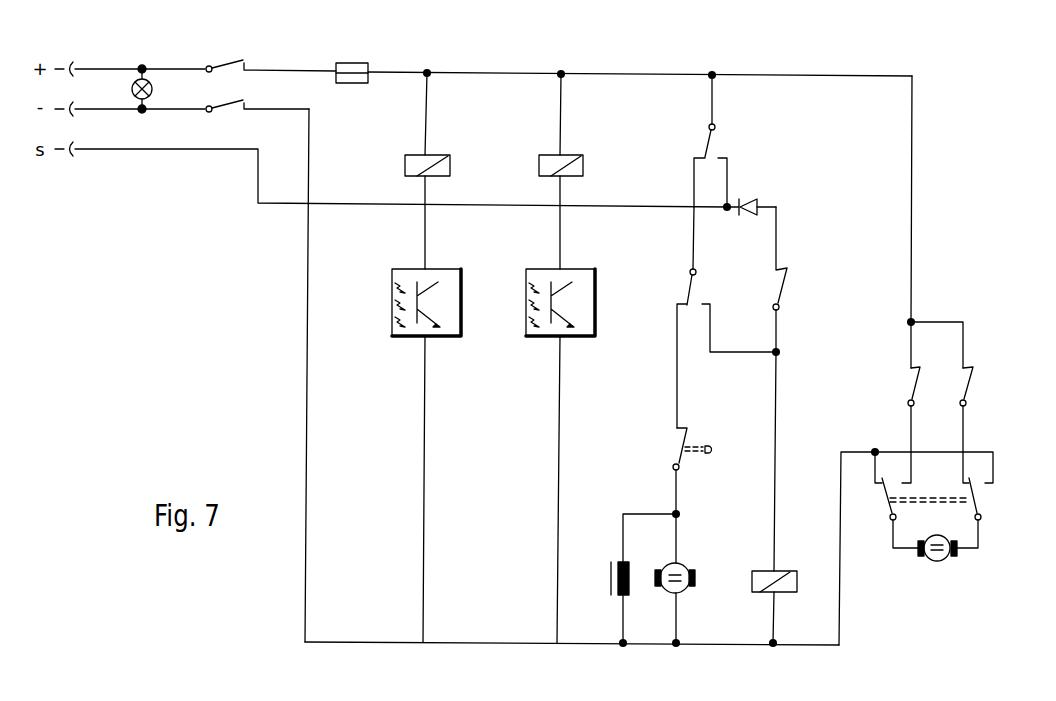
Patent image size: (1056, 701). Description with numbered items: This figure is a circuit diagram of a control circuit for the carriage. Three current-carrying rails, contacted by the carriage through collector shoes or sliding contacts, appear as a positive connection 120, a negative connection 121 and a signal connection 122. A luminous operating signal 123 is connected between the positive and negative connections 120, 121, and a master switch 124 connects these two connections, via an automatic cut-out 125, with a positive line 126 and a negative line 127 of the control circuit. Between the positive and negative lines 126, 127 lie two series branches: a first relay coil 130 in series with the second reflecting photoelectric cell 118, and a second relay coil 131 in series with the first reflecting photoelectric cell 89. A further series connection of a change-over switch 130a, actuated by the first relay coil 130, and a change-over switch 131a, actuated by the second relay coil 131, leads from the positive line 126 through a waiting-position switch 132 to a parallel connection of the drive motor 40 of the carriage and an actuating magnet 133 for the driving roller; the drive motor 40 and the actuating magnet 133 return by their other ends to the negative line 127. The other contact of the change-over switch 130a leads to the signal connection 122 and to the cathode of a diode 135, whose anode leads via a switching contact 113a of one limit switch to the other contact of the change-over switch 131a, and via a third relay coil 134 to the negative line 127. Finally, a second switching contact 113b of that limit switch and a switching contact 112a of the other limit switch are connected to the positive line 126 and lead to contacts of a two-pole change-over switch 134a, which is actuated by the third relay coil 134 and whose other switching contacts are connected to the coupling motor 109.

The positive connection 120 is at (76, 63).
The negative connection 121 is at (80, 112).
The signal connection 122 is at (80, 153).
The luminous operating signal 123 is at (152, 90).
The master switch 124 is at (225, 58).
The automatic cut-out 125 is at (355, 68).
The positive line 126 is at (509, 70).
The negative line 127 is at (378, 643).
The first relay coil 130 is at (422, 155).
The second relay coil 131 is at (553, 155).
The change-over switch 130a is at (705, 144).
The change-over switch 131a is at (688, 288).
The diode 135 is at (748, 193).
The switching contact 113a is at (787, 286).
The second reflecting photoelectric cell 118 is at (447, 327).
The first reflecting photoelectric cell 89 is at (585, 327).
The waiting-position switch 132 is at (678, 453).
The actuating magnet 133 is at (620, 563).
The drive motor 40 is at (683, 567).
The third relay coil 134 is at (780, 573).
The second switching contact 113b is at (913, 386).
The switching contact 112a is at (972, 386).
The two-pole change-over switch 134a is at (888, 497).
The coupling motor 109 is at (935, 558).